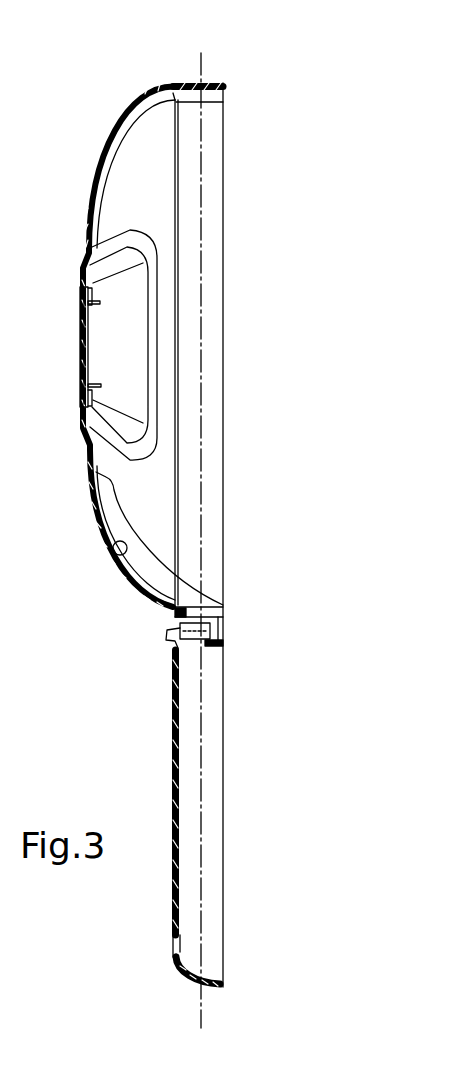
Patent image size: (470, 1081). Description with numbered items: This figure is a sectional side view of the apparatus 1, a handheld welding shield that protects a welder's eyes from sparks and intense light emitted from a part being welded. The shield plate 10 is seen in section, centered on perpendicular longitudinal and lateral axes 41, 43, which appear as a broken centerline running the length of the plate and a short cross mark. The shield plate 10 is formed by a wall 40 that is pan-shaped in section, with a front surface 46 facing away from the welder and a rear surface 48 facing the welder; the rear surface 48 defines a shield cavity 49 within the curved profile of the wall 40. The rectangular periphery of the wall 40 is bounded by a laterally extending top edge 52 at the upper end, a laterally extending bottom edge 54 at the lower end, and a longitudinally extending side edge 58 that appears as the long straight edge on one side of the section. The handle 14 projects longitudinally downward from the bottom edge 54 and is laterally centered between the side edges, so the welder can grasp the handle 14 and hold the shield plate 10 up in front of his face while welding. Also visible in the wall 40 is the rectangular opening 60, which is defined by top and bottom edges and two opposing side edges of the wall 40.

The apparatus 1 is at (78, 72).
The shield plate 10 is at (251, 217).
The handle 14 is at (240, 741).
The wall 40 is at (90, 491).
The longitudinal axis 41 is at (199, 67).
The lateral axis 43 is at (187, 340).
The front surface 46 is at (98, 530).
The rear surface 48 is at (113, 560).
The shield cavity 49 is at (144, 583).
The top edge 52 is at (223, 83).
The bottom edge 54 is at (225, 617).
The side edge 58 is at (223, 258).
The rectangular opening 60 is at (74, 323).